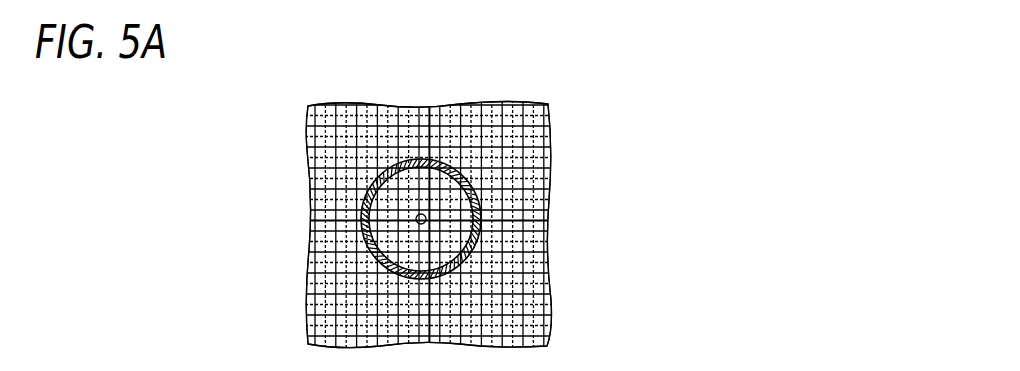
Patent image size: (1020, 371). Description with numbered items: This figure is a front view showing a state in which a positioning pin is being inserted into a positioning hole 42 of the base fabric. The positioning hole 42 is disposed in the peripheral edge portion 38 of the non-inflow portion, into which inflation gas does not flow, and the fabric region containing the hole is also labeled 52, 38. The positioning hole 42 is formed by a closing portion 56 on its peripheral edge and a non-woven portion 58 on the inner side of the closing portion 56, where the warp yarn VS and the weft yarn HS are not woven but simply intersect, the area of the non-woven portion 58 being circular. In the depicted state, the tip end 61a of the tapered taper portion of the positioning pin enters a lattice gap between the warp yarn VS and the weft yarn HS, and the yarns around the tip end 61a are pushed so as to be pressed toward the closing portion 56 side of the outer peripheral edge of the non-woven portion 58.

The peripheral edge portion 38 is at (505, 227).
The fabric layer 52 is at (556, 320).
The positioning hole 42 is at (338, 188).
The closing portion 56 is at (361, 222).
The non-woven portion 58 is at (366, 234).
The tip end 61a is at (548, 221).
The weft yarn HS is at (432, 108).
The warp yarn VS is at (460, 168).